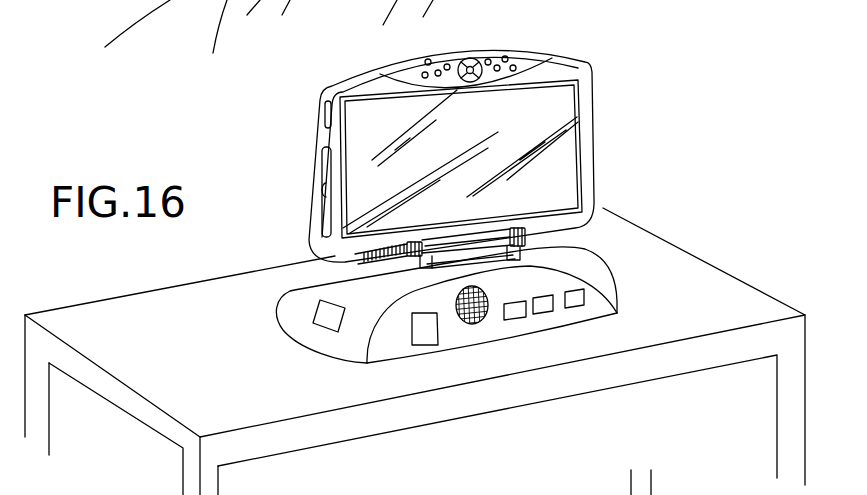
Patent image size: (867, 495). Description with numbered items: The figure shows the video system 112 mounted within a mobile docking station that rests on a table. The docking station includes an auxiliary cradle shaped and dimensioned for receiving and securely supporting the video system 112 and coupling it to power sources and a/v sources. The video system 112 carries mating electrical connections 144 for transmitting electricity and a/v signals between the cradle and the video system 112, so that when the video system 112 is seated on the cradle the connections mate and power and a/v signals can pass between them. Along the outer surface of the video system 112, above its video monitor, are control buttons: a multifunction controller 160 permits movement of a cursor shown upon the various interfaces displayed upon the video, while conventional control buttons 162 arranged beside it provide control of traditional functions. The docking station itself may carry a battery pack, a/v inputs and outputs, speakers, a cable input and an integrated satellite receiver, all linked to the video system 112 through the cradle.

The video system 112 is at (583, 131).
The mating electrical connections 144 is at (306, 300).
The multifunction controller 160 is at (470, 60).
The control buttons 162 is at (508, 60).